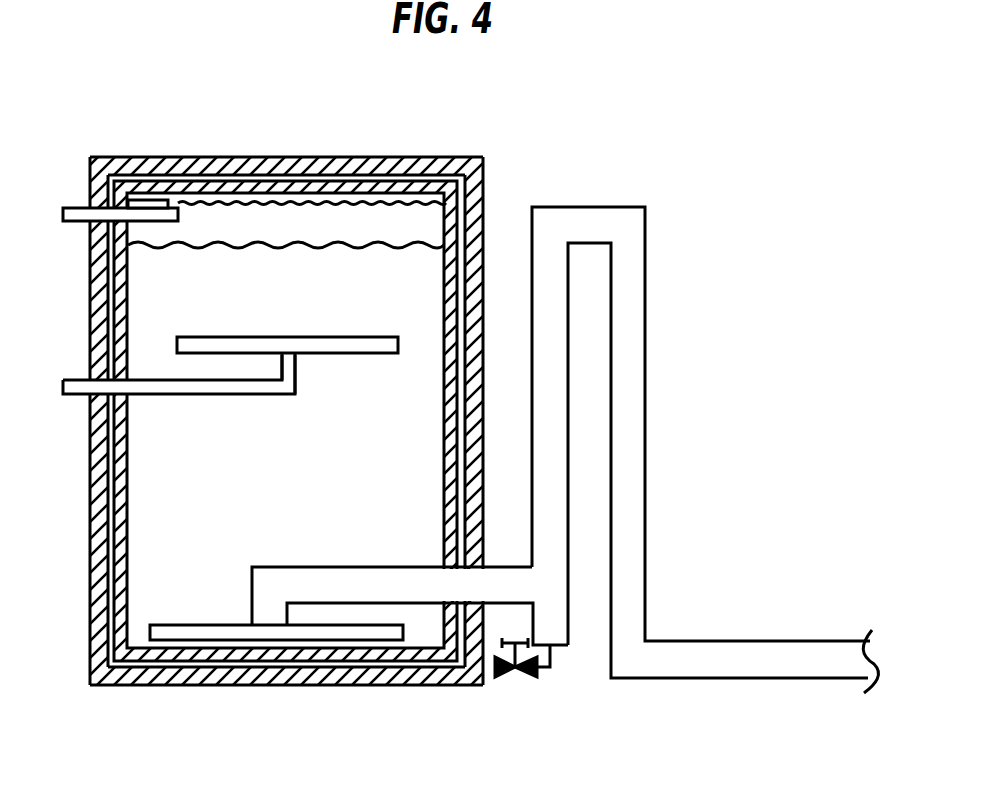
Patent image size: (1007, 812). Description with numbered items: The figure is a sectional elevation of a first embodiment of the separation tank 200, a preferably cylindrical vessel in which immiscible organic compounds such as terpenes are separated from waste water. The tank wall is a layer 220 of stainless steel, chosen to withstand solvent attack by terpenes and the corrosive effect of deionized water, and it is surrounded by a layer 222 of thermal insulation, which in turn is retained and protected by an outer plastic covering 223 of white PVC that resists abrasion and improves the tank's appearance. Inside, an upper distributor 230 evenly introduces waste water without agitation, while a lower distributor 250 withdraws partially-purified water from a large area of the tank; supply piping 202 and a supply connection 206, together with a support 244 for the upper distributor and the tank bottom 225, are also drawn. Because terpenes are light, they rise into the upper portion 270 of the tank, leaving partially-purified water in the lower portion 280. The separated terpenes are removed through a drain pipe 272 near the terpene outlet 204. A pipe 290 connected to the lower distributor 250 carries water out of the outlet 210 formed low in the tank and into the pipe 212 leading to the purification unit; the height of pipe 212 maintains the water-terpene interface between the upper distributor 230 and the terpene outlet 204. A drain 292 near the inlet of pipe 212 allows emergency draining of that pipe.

The separation tank 200 is at (490, 176).
The supply pipe 202 is at (75, 396).
The terpene outlet 204 is at (90, 207).
The inlet pipe 206 is at (75, 224).
The outlet 210 is at (483, 568).
The pipe 212 is at (645, 318).
The layer of stainless steel 220 is at (100, 557).
The layer of thermal insulation 222 is at (378, 180).
The outer plastic covering 223 is at (483, 205).
The bottom wall 225 is at (100, 647).
The upper distributor 230 is at (368, 355).
The plate support pipe 244 is at (157, 378).
The lower distributor 250 is at (188, 623).
The upper portion of the tank 270 is at (258, 223).
The drain pipe 272 is at (130, 175).
The lower portion of the tank 280 is at (322, 510).
The pipe 290 is at (428, 610).
The drain 292 is at (518, 680).